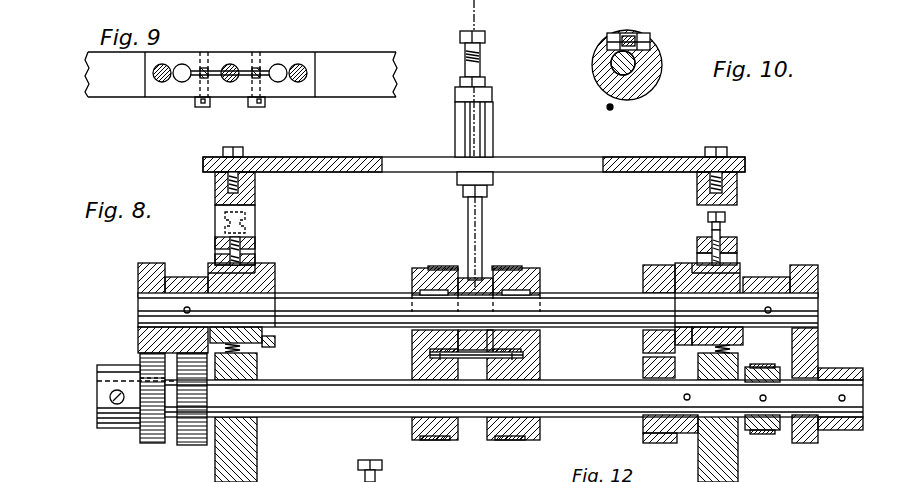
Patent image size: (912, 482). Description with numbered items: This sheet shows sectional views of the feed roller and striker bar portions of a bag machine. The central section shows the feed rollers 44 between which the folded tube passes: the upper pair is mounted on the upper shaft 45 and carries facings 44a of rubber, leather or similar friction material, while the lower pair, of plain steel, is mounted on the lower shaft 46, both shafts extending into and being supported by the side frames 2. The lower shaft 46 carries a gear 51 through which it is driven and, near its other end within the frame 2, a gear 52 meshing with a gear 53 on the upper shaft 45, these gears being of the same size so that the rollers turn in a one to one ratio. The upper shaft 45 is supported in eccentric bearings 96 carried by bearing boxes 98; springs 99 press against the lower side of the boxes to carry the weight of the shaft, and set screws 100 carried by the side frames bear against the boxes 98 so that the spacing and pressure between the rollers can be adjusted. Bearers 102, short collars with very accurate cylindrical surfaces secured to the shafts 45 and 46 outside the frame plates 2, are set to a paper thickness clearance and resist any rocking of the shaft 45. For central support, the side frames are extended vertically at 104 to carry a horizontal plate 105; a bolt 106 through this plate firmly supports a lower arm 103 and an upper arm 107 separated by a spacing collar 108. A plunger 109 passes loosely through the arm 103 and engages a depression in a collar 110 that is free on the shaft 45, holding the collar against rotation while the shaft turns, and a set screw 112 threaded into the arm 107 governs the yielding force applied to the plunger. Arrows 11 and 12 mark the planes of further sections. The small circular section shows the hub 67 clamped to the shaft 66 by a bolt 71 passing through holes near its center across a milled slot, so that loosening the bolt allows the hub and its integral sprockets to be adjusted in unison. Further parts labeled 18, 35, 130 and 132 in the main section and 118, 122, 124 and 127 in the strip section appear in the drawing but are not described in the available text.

In FIG. 8, the side frame 2 is at (738, 476).
In FIG. 8, the section line 11 is at (474, 22).
In FIG. 8, the section line 12 is at (260, 247).
In FIG. 8, the pin 18 is at (430, 357).
In FIG. 8, the connecting rod 35 is at (525, 341).
In FIG. 8, the feed rollers 44 is at (418, 268).
In FIG. 8, the facings 44a is at (443, 266).
In FIG. 8, the upper feed roller shaft 45 is at (358, 293).
In FIG. 8, the lower shaft 46 is at (600, 383).
In FIG. 8, the gear 51 is at (190, 445).
In FIG. 8, the gear 52 is at (660, 443).
In FIG. 8, the gear 53 is at (655, 265).
In FIG. 10, the shaft 66 is at (617, 88).
In FIG. 10, the hub 67 is at (650, 75).
In FIG. 10, the bolt 71 is at (628, 33).
In FIG. 8, the eccentric bearings 96 is at (275, 285).
In FIG. 8, the bearing boxes 98 is at (208, 268).
In FIG. 8, the springs 99 is at (255, 350).
In FIG. 8, the set screws 100 is at (255, 215).
In FIG. 8, the bearers 102 is at (155, 270).
In FIG. 8, the lower arm 103 is at (493, 178).
In FIG. 8, the vertical extension of side frames 104 is at (215, 192).
In FIG. 8, the horizontal plate 105 is at (615, 157).
In FIG. 8, the bolt 106 is at (485, 80).
In FIG. 8, the upper arm 107 is at (492, 95).
In FIG. 8, the spacing collar 108 is at (493, 112).
In FIG. 8, the plunger 109 is at (483, 238).
In FIG. 8, the collar 110 is at (488, 280).
In FIG. 8, the set screw 112 is at (481, 55).
In FIG. 9, the bar 118 is at (350, 60).
In FIG. 9, the link 122 is at (288, 57).
In FIG. 9, the pivot 124 is at (232, 66).
In FIG. 9, the stop 127 is at (255, 107).
In FIG. 8, the end block 130 is at (785, 435).
In FIG. 8, the bearing sleeve 132 is at (818, 340).